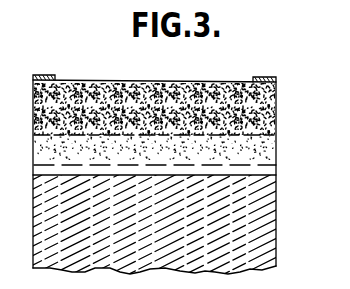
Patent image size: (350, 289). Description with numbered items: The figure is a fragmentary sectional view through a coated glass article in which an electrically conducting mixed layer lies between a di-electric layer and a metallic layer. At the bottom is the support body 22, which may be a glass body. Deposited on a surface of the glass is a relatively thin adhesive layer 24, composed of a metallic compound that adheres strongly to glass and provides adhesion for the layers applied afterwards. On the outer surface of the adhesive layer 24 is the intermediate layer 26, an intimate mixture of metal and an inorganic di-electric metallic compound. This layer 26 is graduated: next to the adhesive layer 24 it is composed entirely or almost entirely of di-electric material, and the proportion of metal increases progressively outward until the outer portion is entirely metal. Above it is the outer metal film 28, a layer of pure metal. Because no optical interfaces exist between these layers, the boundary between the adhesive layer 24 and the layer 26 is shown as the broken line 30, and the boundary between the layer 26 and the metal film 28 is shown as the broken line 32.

The support body 22 is at (263, 229).
The adhesive layer 24 is at (272, 172).
The intermediate layer 26 is at (273, 150).
The metal film 28 is at (187, 92).
The broken line 30 is at (278, 163).
The broken line 32 is at (266, 124).